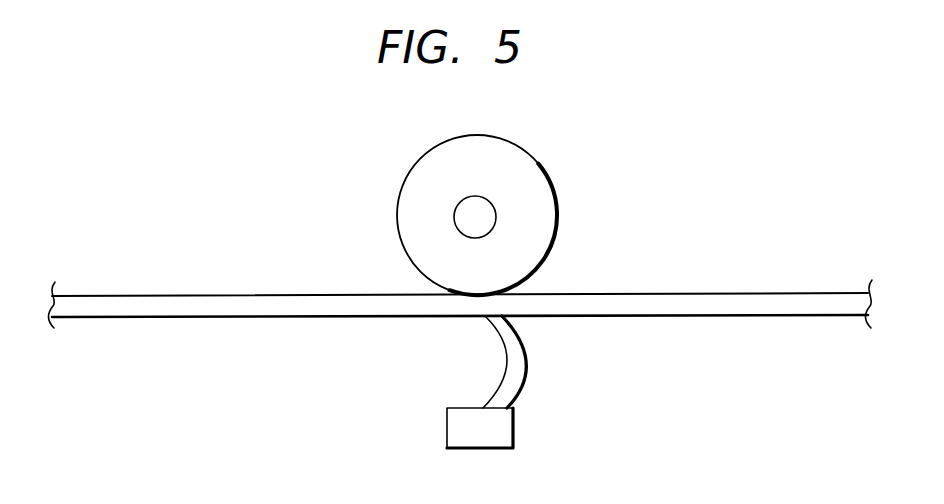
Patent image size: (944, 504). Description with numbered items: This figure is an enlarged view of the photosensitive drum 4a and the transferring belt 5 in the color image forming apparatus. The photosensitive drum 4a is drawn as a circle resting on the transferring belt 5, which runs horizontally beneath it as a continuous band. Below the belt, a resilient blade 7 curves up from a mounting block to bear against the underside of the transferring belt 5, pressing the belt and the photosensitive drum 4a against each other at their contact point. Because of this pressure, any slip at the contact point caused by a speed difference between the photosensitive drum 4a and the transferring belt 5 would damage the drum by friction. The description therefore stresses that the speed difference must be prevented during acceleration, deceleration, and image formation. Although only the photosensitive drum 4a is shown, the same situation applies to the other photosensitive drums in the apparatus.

The photosensitive drum 4a is at (527, 152).
The transferring belt 5 is at (675, 295).
The blade 7 is at (525, 357).